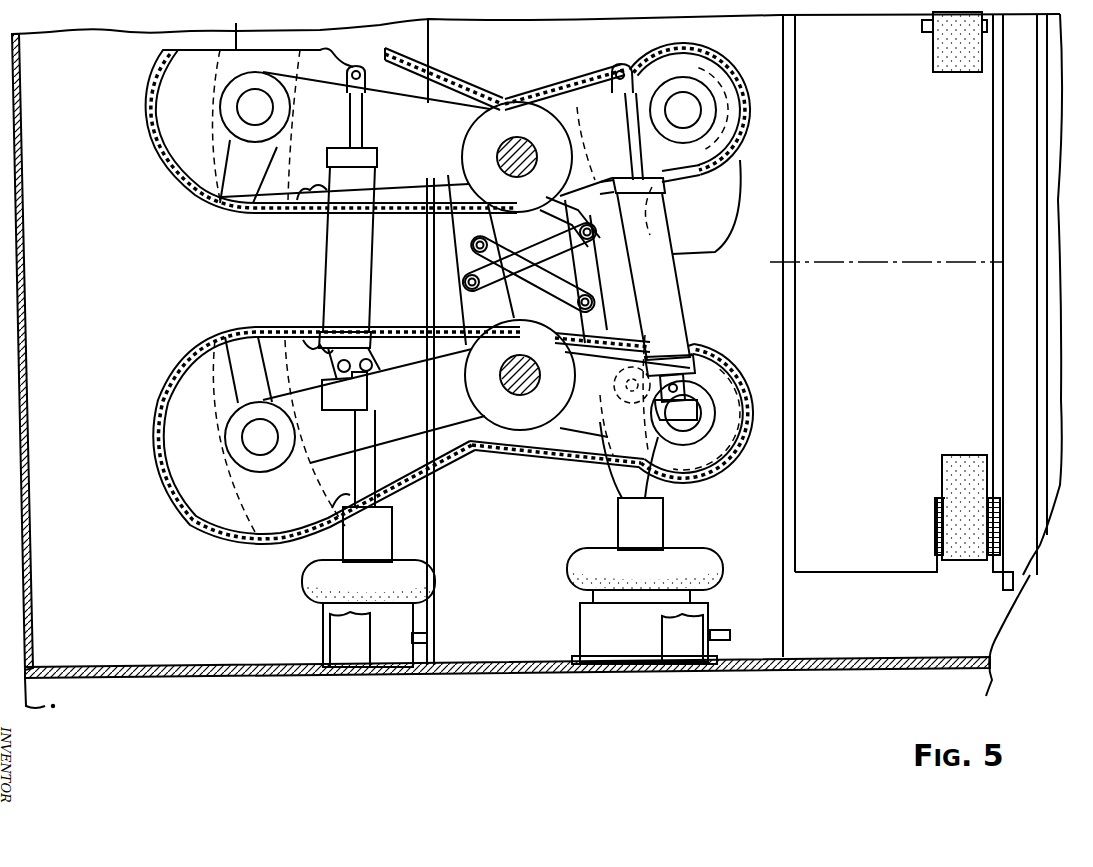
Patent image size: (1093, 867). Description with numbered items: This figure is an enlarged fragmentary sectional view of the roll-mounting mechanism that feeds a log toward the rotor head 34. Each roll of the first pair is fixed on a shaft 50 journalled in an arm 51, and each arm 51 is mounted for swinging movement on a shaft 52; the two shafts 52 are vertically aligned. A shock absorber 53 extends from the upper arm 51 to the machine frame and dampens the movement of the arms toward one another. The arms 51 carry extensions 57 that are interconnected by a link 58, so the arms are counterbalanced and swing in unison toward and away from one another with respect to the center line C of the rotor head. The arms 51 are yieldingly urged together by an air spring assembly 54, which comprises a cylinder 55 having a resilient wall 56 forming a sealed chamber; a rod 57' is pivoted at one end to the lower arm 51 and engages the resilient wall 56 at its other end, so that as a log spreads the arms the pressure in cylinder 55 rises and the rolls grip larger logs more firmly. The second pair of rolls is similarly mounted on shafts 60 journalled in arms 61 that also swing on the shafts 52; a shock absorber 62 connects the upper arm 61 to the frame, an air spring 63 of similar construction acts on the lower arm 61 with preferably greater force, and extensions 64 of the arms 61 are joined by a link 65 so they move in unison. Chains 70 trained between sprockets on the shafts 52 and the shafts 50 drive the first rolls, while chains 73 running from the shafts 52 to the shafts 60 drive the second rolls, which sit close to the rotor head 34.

The rotor head 34 is at (853, 568).
The shaft 50 is at (243, 113).
The arm 51 is at (388, 102).
The shaft 52 is at (510, 140).
The shock absorber 53 is at (333, 265).
The air spring assembly 54 is at (311, 614).
The cylinder 55 is at (340, 638).
The resilient wall 56 is at (417, 570).
The extension 57 is at (512, 260).
The rod 57' is at (349, 458).
The link 58 is at (557, 283).
The shaft 60 is at (687, 100).
The arm 61 is at (592, 107).
The shock absorber 62 is at (680, 262).
The air spring 63 is at (718, 578).
The extension 64 is at (563, 210).
The link 65 is at (567, 241).
The chain 70 is at (428, 67).
The chain 73 is at (553, 83).
The center line C is at (840, 258).